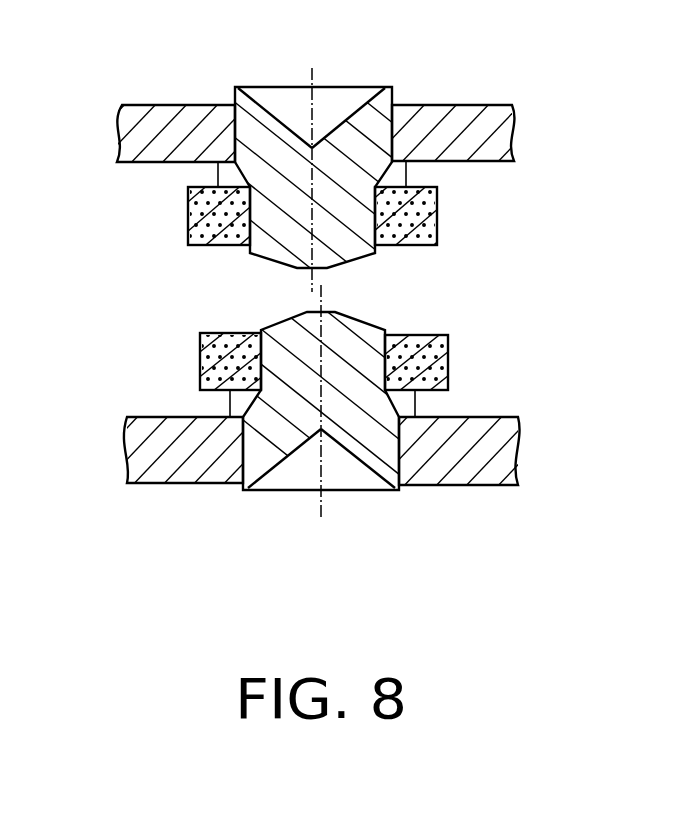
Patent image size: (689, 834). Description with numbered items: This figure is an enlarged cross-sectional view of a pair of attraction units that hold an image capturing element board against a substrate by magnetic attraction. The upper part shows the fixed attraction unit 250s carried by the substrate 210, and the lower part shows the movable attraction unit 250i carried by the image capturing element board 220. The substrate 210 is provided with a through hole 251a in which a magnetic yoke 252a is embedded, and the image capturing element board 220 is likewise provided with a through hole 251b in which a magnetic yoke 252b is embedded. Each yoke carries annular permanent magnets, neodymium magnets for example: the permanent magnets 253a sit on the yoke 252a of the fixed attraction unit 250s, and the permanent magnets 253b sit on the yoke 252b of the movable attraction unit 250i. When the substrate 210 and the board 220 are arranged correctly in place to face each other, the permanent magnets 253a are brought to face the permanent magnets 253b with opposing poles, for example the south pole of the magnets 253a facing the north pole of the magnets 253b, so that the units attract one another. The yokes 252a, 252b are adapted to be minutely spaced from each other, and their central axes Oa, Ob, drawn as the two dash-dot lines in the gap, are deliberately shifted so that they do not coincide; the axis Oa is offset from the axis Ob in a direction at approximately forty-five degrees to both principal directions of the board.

The substrate 210 is at (120, 141).
The image capturing element board 220 is at (127, 455).
The fixed attraction unit 250s is at (329, 137).
The movable attraction unit 250i is at (372, 464).
The through hole 251a is at (392, 117).
The magnetic yoke 252a is at (262, 128).
The permanent magnets 253a is at (437, 222).
The through hole 251b is at (392, 477).
The magnetic yoke 252b is at (273, 458).
The permanent magnets 253b is at (437, 367).
The central axis Oa is at (311, 288).
The central axis Ob is at (323, 302).